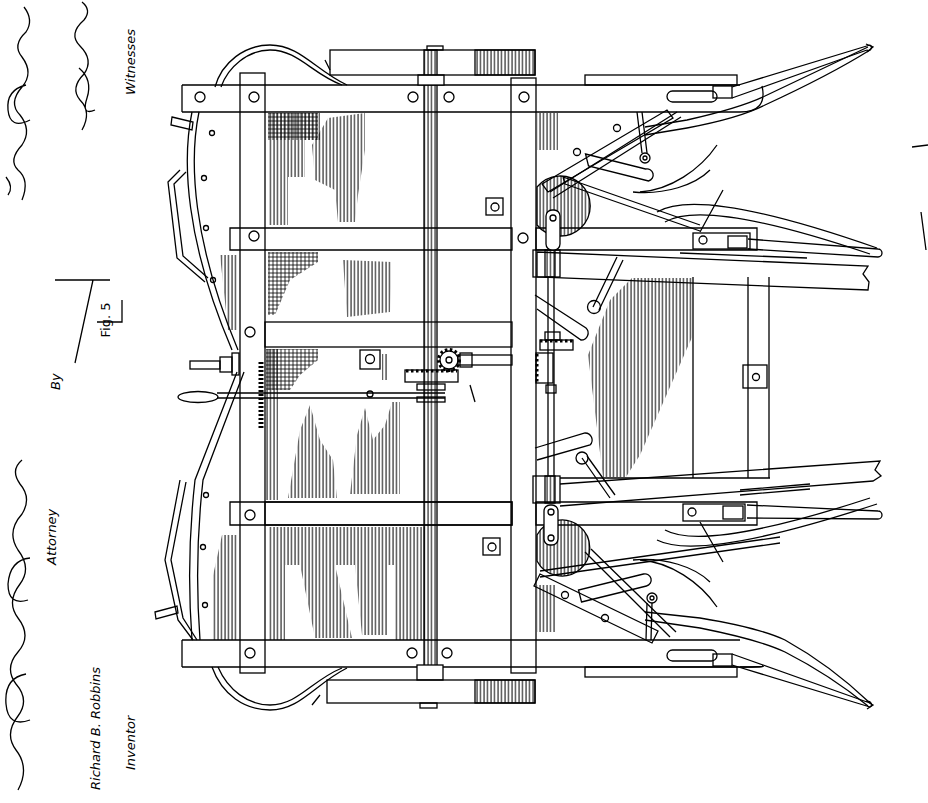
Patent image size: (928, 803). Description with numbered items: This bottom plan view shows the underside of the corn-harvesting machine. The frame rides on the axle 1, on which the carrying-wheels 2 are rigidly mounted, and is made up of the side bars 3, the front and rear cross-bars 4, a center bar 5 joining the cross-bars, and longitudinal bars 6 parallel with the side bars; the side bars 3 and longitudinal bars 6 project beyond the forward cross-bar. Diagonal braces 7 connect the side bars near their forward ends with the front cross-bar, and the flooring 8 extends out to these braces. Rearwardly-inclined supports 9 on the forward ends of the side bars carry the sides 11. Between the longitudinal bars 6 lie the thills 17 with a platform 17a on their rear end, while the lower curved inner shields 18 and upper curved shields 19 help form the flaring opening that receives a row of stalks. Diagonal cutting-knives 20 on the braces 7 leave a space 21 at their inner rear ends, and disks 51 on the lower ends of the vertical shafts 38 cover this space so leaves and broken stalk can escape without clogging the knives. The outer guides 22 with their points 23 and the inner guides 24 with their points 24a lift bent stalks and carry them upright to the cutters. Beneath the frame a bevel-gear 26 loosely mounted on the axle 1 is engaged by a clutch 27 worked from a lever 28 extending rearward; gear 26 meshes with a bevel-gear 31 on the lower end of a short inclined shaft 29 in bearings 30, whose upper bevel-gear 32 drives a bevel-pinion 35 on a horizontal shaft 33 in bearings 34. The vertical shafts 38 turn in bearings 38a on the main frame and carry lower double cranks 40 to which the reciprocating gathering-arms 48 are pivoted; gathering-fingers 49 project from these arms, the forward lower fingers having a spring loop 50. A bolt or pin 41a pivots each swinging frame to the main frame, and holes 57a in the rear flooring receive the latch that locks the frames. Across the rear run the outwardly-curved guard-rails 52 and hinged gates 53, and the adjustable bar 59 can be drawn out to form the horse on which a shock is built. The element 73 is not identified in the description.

The axle 1 is at (434, 172).
The carrying-wheels 2 is at (478, 708).
The side bars 3 is at (472, 376).
The front and rear cross-bars 4 is at (376, 373).
The center bar 5 is at (388, 351).
The longitudinal bars 6 is at (388, 446).
The diagonal braces 7 is at (596, 140).
The flooring 8 is at (385, 376).
The rearwardly-inclined supports 9 is at (661, 368).
The sides 11 is at (314, 381).
The thills 17 is at (709, 379).
The platform 17a is at (698, 360).
The lower curved inner shields 18 is at (740, 202).
The upper curved shields 19 is at (718, 383).
The diagonal cutting-knives 20 is at (648, 140).
The space 21 is at (540, 185).
The guides 22 is at (758, 376).
The point 23 is at (885, 380).
The guides 24 is at (872, 246).
The point 24a is at (865, 262).
The bevel-gear 26 is at (452, 380).
The clutch 27 is at (446, 399).
The lever 28 is at (311, 395).
The short inclined shaft 29 is at (488, 354).
The bearings 30 is at (486, 397).
The bevel-gear 31 is at (451, 349).
The bevel-gear 32 is at (554, 365).
The horizontal shaft 33 is at (560, 395).
The bearings 34 is at (562, 272).
The bevel-pinion 35 is at (568, 345).
The vertical shafts 38 is at (540, 222).
The bearings 38a is at (646, 376).
The lower double cranks 40 is at (652, 585).
The bolt or pin 41a is at (479, 376).
The gathering-arms 48 is at (649, 176).
The gathering-fingers 49 is at (671, 373).
The loop 50 is at (699, 374).
The disks 51 is at (540, 192).
The guard-rails 52 is at (199, 286).
The gates 53 is at (188, 135).
The holes 57a is at (204, 603).
The adjustable bar 59 is at (212, 369).
The spring 73 is at (279, 381).